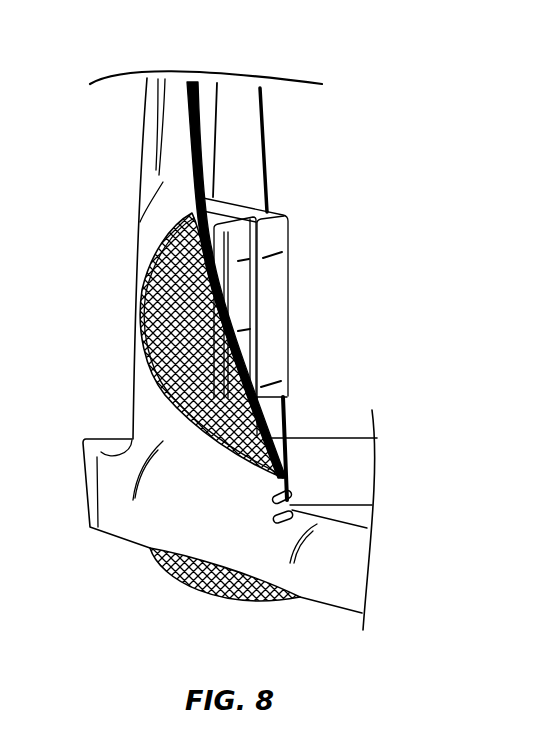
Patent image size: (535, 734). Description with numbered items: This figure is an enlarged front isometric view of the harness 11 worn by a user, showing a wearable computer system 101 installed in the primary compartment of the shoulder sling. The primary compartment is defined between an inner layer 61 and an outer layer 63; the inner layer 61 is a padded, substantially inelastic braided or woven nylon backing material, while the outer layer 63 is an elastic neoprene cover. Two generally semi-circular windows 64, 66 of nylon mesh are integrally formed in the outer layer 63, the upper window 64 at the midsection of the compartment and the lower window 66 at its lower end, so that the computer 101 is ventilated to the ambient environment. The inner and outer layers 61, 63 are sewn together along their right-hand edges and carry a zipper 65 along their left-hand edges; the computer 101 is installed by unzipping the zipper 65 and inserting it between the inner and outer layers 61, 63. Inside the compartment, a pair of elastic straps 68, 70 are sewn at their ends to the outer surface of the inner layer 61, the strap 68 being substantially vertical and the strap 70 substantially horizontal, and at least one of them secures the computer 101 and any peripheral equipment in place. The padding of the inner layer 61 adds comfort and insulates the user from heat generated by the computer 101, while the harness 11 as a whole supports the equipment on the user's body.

The harness 11 is at (66, 226).
The inner layer 61 is at (240, 177).
The outer layer 63 is at (152, 177).
The window 64 is at (143, 332).
The zipper 65 is at (292, 497).
The window 66 is at (180, 578).
The elastic strap 68 is at (202, 144).
The elastic strap 70 is at (268, 411).
The wearable computer system 101 is at (277, 272).